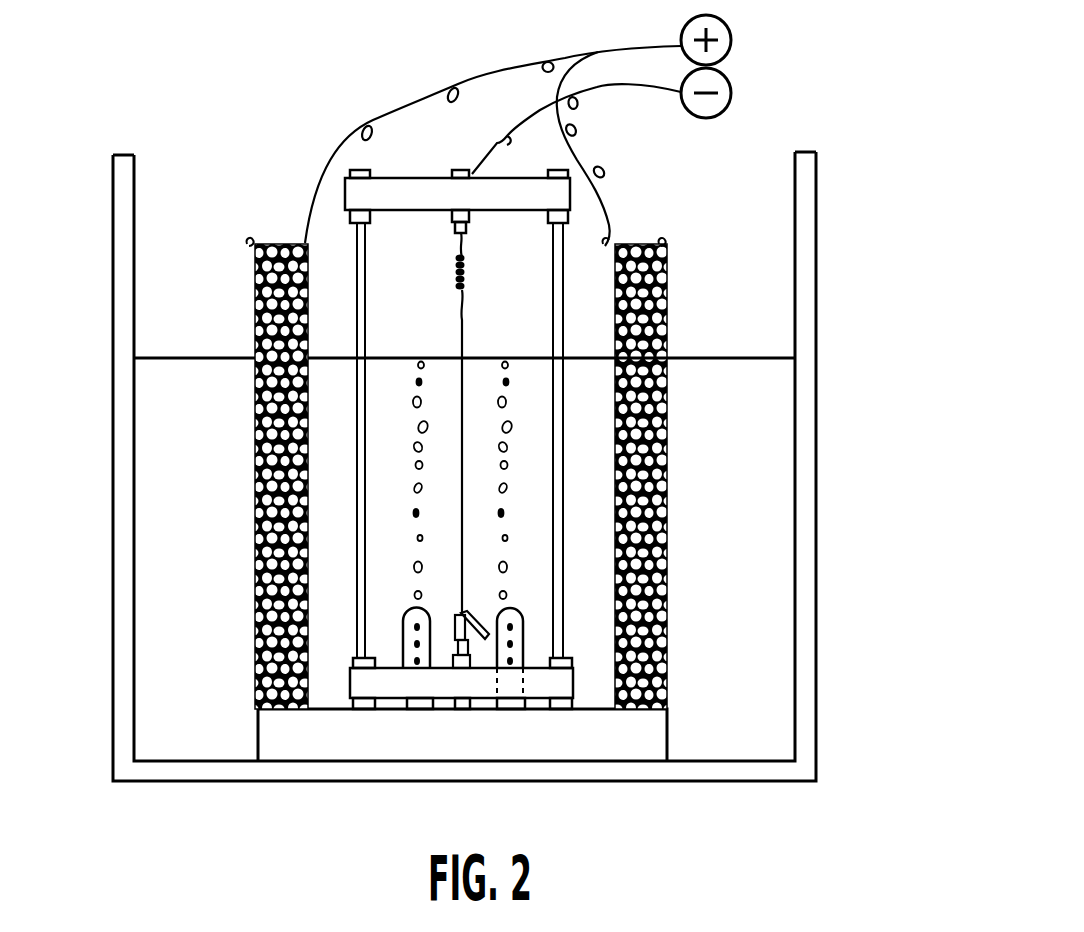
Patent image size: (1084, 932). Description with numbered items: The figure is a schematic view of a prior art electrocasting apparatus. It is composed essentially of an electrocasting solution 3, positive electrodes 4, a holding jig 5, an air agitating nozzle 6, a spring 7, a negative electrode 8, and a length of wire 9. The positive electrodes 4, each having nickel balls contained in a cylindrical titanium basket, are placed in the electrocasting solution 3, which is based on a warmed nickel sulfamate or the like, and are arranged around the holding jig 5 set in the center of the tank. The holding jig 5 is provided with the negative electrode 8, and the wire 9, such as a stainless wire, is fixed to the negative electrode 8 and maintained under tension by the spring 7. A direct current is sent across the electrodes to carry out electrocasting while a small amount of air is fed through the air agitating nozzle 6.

The electrocasting solution 3 is at (177, 370).
The positive electrodes 4 is at (255, 237).
The holding jig 5 is at (533, 190).
The air agitating nozzle 6 is at (514, 620).
The spring 7 is at (467, 273).
The negative electrode 8 is at (458, 170).
The wire 9 is at (463, 340).